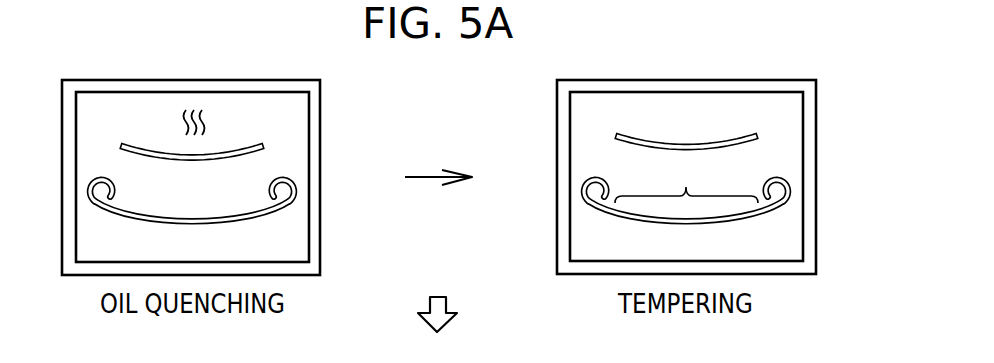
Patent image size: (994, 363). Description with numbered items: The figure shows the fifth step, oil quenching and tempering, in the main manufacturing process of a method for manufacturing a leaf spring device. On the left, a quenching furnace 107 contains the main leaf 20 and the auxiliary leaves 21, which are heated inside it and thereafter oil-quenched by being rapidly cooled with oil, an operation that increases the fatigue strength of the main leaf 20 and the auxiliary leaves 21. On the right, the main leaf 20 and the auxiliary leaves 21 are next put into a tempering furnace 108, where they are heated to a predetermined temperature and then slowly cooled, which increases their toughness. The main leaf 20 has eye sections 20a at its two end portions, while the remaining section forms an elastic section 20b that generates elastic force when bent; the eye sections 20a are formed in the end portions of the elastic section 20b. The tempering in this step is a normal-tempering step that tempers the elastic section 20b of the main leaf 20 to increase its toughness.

The quenching furnace 107 is at (272, 80).
The tempering furnace 108 is at (770, 80).
The auxiliary leaves 21 is at (232, 149).
The main leaf 20 is at (473, 259).
The eye sections 20a is at (581, 199).
The elastic section 20b is at (686, 178).